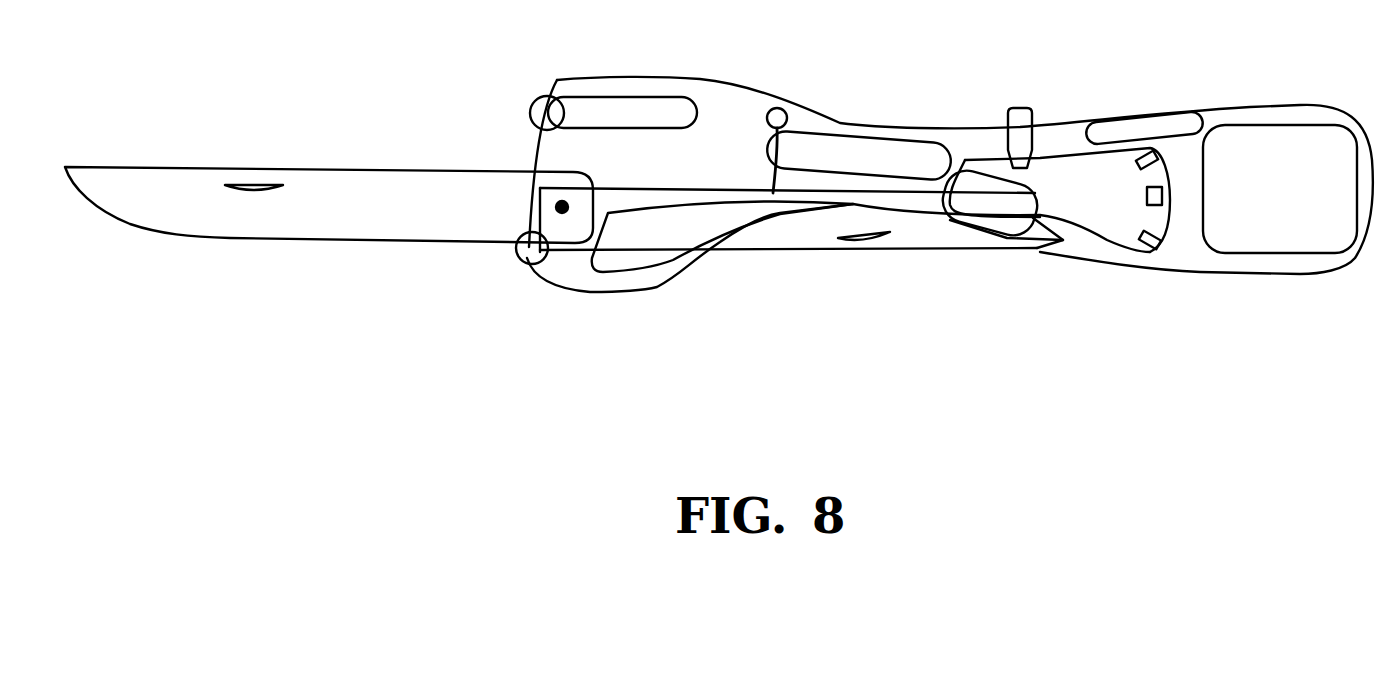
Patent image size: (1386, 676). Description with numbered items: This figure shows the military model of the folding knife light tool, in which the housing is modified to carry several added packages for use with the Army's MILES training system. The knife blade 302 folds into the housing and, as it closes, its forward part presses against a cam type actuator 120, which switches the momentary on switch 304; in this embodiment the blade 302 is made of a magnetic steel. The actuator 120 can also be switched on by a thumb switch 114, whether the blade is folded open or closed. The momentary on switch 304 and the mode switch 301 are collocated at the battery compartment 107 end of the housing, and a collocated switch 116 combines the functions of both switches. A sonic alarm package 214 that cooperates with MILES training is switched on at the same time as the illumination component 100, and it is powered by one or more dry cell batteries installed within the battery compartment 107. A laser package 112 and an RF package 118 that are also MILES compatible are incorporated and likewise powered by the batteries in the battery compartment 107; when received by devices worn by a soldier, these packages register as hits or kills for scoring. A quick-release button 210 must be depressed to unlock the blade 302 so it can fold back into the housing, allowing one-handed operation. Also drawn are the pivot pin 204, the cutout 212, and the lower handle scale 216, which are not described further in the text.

The illumination component 100 is at (524, 262).
The battery compartment 107 is at (1267, 223).
The laser package 112 is at (613, 112).
The thumb switch 114 is at (1020, 108).
The collocated switch 116 is at (1063, 178).
The RF package 118 is at (1181, 117).
The cam type actuator 120 is at (962, 191).
The pivot pin 204 is at (555, 201).
The quick-release button 210 is at (777, 107).
The cutout 212 is at (684, 226).
The sonic alarm package 214 is at (866, 159).
The lower handle scale 216 is at (587, 298).
The mode switch 301 is at (1134, 204).
The knife blade 302 is at (312, 194).
The momentary on switch 304 is at (968, 180).